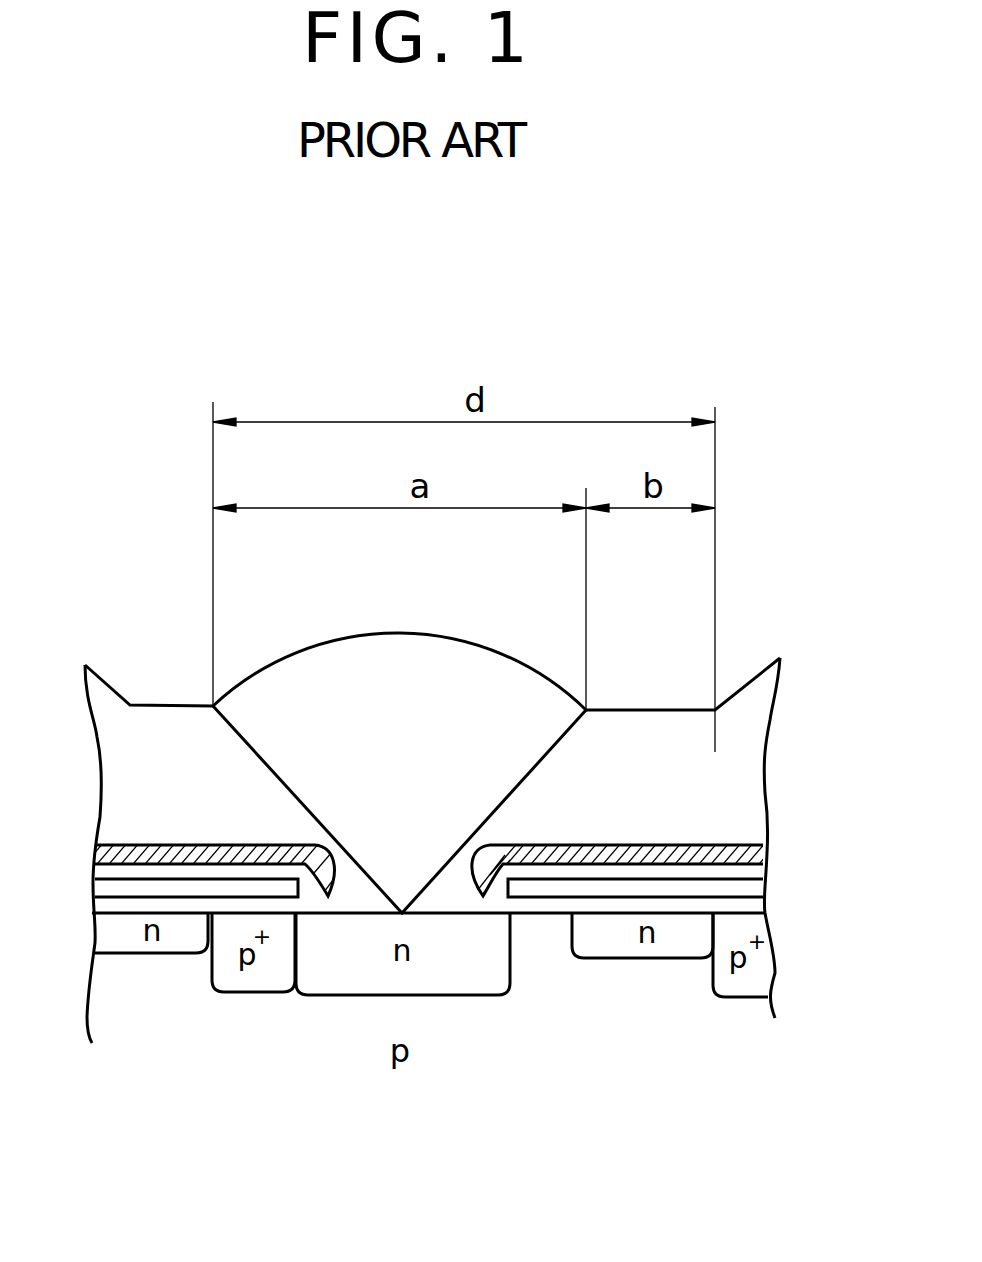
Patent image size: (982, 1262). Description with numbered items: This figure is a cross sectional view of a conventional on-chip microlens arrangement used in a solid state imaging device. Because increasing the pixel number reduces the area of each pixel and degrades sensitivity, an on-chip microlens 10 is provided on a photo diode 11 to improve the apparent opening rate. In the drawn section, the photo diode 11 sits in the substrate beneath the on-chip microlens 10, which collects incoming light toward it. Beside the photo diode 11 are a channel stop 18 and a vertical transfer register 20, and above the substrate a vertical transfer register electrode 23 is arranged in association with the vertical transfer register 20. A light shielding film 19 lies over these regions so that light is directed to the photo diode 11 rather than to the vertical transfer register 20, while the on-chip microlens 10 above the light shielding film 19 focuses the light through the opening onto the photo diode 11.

The on-chip microlens 10 is at (555, 680).
The light shielding film 19 is at (757, 855).
The vertical transfer register electrode 23 is at (753, 893).
The channel stop 18 is at (207, 987).
The photo diode 11 is at (332, 985).
The vertical transfer register 20 is at (665, 952).